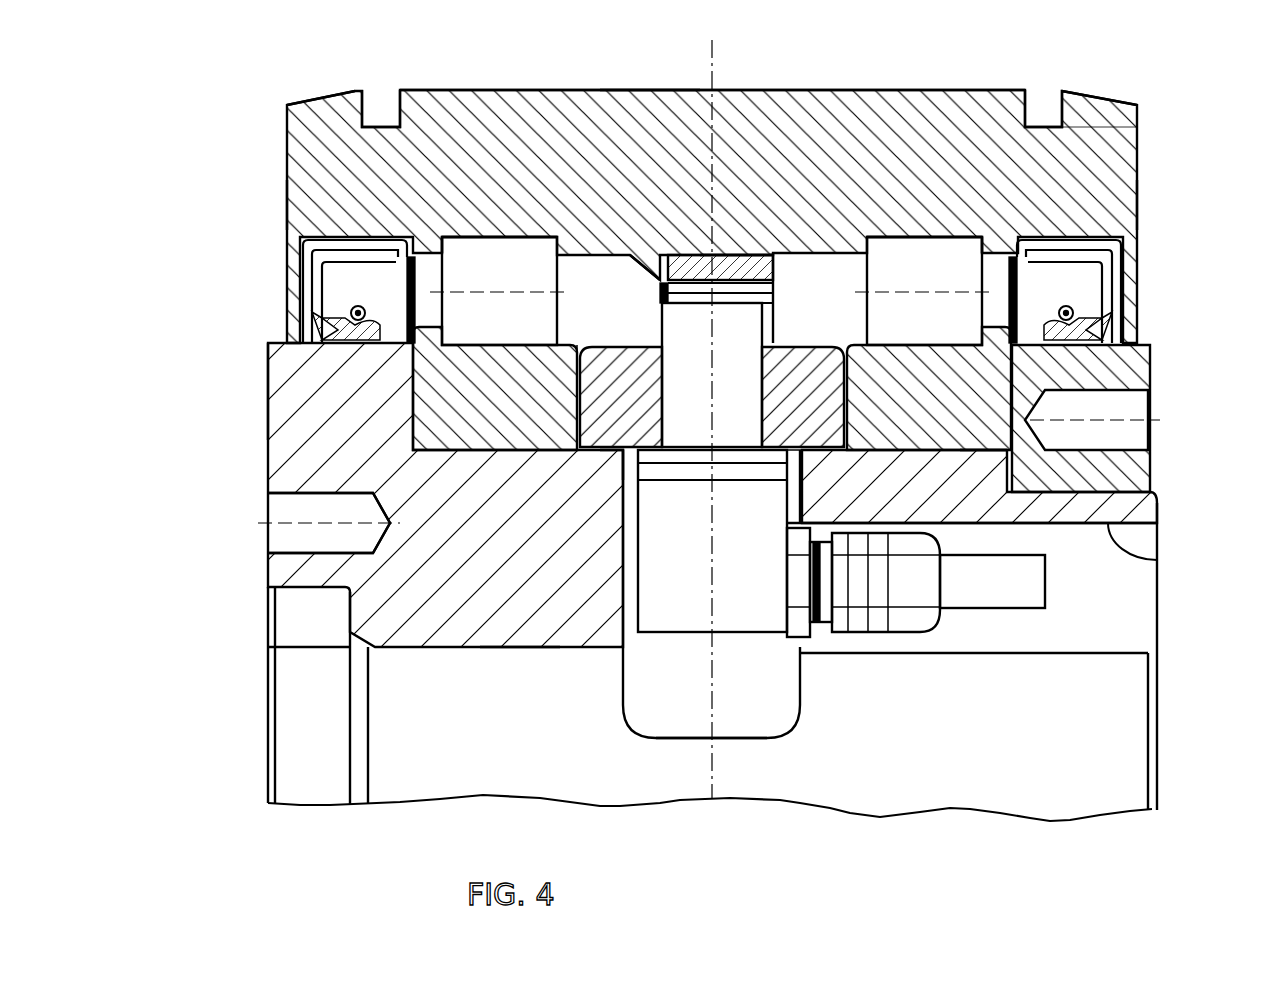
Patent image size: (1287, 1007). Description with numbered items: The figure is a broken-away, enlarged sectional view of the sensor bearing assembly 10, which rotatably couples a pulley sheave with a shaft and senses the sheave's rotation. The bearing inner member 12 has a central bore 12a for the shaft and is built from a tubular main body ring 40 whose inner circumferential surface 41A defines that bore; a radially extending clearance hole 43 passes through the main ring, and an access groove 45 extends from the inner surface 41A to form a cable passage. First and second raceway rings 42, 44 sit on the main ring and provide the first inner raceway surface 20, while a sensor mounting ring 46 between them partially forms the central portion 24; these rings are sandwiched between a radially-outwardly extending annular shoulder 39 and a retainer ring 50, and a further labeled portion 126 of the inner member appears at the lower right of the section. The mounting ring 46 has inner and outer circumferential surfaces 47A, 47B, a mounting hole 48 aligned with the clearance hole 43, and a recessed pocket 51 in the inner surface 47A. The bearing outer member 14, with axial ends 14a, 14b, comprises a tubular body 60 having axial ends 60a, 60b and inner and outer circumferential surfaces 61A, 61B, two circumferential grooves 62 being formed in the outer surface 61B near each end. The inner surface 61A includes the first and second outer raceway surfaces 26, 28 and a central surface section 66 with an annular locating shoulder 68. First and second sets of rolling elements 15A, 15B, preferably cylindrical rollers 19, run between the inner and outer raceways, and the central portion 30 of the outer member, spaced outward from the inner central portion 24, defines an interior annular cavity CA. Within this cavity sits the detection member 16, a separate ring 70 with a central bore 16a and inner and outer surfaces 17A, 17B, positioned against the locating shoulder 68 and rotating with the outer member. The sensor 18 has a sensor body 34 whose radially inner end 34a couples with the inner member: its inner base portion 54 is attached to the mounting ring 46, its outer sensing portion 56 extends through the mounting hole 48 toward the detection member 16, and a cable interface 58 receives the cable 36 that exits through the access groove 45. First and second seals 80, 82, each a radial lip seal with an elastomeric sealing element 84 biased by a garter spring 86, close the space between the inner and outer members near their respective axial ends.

The sensor bearing assembly 10 is at (232, 52).
The bearing inner member 12 is at (673, 579).
The central bore 12a is at (268, 401).
The bearing outer member 14 is at (212, 158).
The first axial end of outer member 14a is at (284, 202).
The second axial end of outer member 14b is at (1140, 192).
The first set of rolling elements 15A is at (477, 243).
The second set of rolling elements 15B is at (940, 243).
The detection member 16 is at (738, 226).
The central bore of detection member 16a is at (771, 296).
The inner surface of detection member 17A is at (776, 318).
The second cavity wall 17B is at (753, 250).
The sensor 18 is at (711, 578).
The cylindrical rollers 19 is at (537, 248).
The first inner raceway surface 20 is at (471, 342).
The central portion of inner member 24 is at (862, 332).
The first outer raceway surface 26 is at (517, 243).
The second outer raceway surface 28 is at (892, 242).
The central portion of outer member 30 is at (643, 244).
The sensor body 34 is at (625, 647).
The first radially inner end of sensor body 34a is at (680, 253).
The cable 36 is at (1012, 598).
The annular shoulder 39 is at (270, 378).
The main body ring 40 is at (292, 459).
The inner circumferential surface of main ring 41A is at (468, 648).
The first raceway ring 42 is at (509, 466).
The clearance hole 43 is at (770, 709).
The second raceway ring 44 is at (966, 458).
The access groove 45 is at (1148, 557).
The sensor mounting ring 46 is at (591, 456).
The inner circumferential surface of mounting ring 47A is at (648, 472).
The outer circumferential surface of mounting ring 47B is at (612, 347).
The mounting hole 48 is at (667, 374).
The retainer ring 50 is at (1138, 372).
The recessed pocket 51 is at (800, 470).
The inner base portion 54 is at (742, 590).
The outer sensing portion 56 is at (767, 382).
The cable interface 58 is at (882, 626).
The tubular body 60 is at (437, 89).
The first axial end of outer member body 60a is at (287, 128).
The second axial end of outer member body 60b is at (1137, 160).
The inner circumferential surface of outer member body 61A is at (575, 258).
The outer circumferential surface of outer member body 61B is at (632, 90).
The circumferential grooves 62 is at (378, 122).
The central surface section 66 is at (735, 308).
The locating shoulder 68 is at (655, 268).
The ring 70 is at (772, 264).
The first seal 80 is at (302, 283).
The second seal 82 is at (1124, 284).
The elastomeric sealing element 84 is at (363, 342).
The garter spring 86 is at (361, 305).
The housing lower portion 126 is at (1158, 512).
The interior annular cavity CA is at (847, 266).